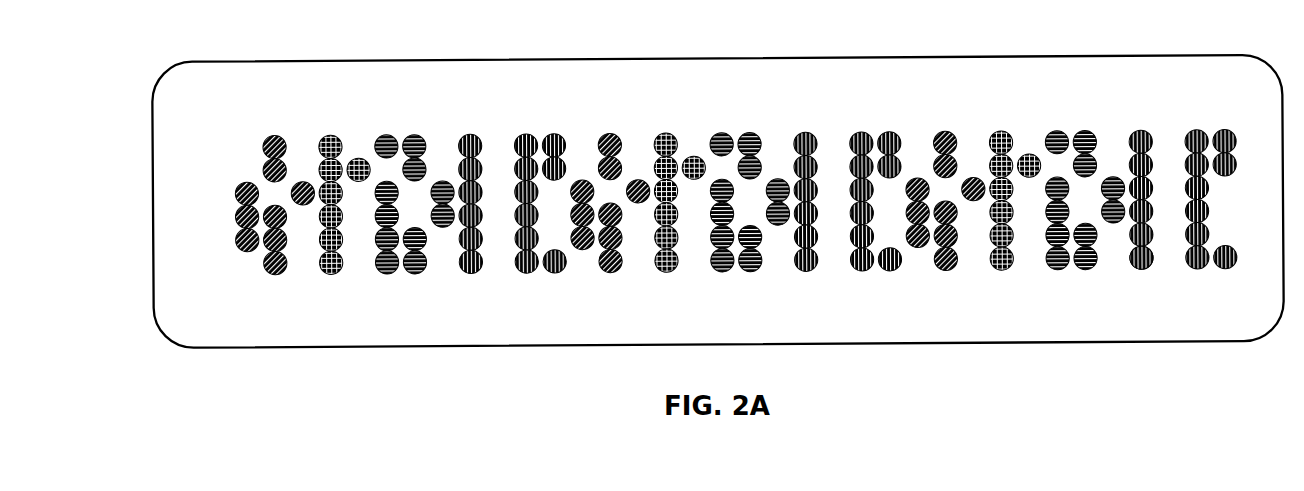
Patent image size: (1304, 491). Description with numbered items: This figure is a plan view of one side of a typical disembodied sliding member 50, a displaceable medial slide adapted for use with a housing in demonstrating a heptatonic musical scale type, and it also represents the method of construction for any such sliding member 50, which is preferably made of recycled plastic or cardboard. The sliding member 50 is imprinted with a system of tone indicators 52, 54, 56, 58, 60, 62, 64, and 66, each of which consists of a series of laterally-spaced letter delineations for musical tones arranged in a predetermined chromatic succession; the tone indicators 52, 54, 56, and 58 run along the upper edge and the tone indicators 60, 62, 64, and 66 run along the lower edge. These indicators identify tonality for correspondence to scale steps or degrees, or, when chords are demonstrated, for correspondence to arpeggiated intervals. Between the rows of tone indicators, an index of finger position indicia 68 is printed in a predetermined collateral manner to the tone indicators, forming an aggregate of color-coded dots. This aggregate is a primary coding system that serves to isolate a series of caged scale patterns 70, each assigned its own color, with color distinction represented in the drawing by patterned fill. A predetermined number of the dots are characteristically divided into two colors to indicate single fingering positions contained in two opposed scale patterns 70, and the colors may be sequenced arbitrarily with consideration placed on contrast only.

The sliding member 50 is at (1197, 73).
The tone indicator 52 is at (243, 74).
The tone indicator 54 is at (968, 72).
The tone indicator 56 is at (240, 105).
The tone indicator 58 is at (968, 101).
The tone indicator 60 is at (243, 305).
The tone indicator 62 is at (975, 300).
The tone indicator 64 is at (245, 337).
The tone indicator 66 is at (975, 328).
The finger position indicia 68 is at (1142, 284).
The caged scale pattern 70 is at (538, 136).